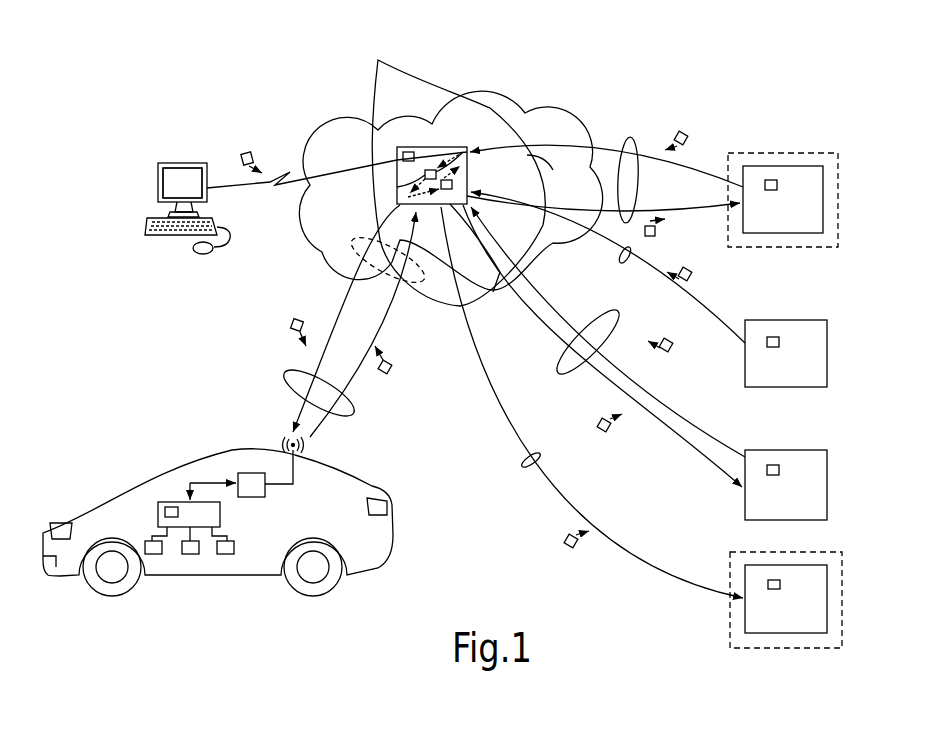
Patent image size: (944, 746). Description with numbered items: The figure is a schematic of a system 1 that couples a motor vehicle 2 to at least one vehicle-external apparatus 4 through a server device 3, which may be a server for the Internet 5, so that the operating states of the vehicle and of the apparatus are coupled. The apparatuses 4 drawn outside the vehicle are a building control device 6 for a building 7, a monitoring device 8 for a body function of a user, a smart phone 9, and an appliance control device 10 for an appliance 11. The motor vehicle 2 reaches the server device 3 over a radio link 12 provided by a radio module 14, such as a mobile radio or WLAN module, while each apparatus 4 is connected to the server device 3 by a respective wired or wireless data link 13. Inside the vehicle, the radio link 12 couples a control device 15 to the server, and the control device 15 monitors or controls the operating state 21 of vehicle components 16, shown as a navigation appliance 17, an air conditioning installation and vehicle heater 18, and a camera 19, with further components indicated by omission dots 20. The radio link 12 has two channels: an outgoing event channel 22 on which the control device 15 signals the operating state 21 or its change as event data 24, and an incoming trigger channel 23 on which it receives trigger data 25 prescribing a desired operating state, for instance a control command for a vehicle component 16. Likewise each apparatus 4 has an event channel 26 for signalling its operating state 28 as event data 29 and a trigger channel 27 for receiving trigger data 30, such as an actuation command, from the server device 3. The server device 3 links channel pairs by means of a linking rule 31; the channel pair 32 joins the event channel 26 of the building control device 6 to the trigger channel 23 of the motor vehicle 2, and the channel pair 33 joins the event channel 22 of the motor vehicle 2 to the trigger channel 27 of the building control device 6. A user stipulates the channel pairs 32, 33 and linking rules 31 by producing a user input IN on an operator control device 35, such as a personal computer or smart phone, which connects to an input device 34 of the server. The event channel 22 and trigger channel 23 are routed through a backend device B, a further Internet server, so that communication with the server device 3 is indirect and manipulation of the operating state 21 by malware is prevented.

The system 1 is at (152, 166).
The motor vehicle 2 is at (232, 452).
The server device 3 is at (463, 148).
The vehicle-external apparatus 4 is at (846, 567).
The Internet 5 is at (337, 125).
The building control device 6 is at (824, 210).
The building 7 is at (838, 165).
The monitoring device 8 is at (828, 355).
The smart phone 9 is at (828, 470).
The appliance control device 10 is at (828, 598).
The appliance 11 is at (842, 627).
The radio link 12 is at (352, 410).
The data link 13 is at (633, 140).
The radio module 14 is at (266, 490).
The control device 15 is at (178, 502).
The vehicle components 16 is at (158, 558).
The navigation appliance 17 is at (146, 546).
The air conditioning installation and vehicle heater 18 is at (197, 554).
The camera 19 is at (234, 547).
The omission dots 20 is at (246, 523).
The operating state 21 is at (163, 508).
The event channel 22 is at (387, 328).
The trigger channel 23 is at (330, 300).
The event data 24 is at (391, 370).
The trigger data 25 is at (292, 325).
The event channel 26 is at (703, 165).
The trigger channel 27 is at (690, 206).
The operating state 28 is at (777, 186).
The event data 29 is at (683, 133).
The trigger data 30 is at (656, 233).
The linking rule 31 is at (397, 187).
The channel pair 32 is at (452, 170).
The channel pair 33 is at (493, 292).
The input device 34 is at (409, 150).
The operator control device 35 is at (158, 184).
The backend device B is at (413, 270).
The user input IN is at (252, 152).